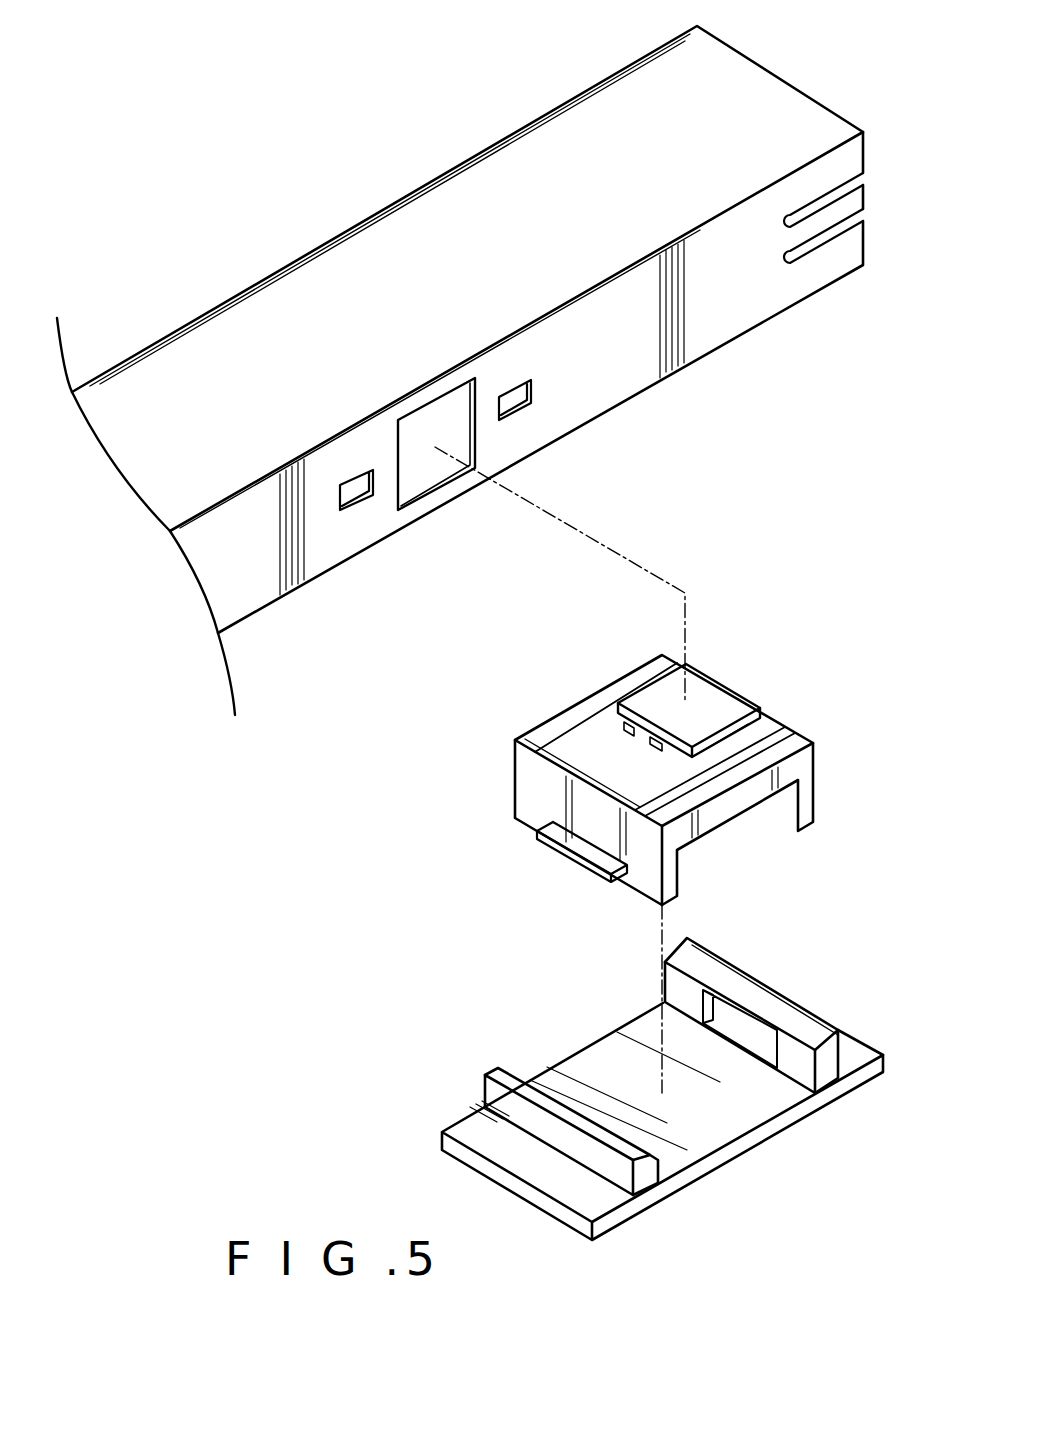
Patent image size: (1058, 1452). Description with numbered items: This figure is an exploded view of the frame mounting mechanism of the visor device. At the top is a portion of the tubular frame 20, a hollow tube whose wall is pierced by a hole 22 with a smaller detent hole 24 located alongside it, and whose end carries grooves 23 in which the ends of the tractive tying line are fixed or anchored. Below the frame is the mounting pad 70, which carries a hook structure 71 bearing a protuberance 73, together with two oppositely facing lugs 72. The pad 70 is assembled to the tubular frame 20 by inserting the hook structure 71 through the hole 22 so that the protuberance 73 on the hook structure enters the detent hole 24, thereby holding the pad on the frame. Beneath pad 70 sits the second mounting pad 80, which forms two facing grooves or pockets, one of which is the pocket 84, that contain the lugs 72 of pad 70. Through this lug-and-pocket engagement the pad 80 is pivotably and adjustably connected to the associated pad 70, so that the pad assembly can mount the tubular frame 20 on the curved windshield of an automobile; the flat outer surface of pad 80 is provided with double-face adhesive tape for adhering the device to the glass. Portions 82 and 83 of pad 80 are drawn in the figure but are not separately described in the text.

The tubular frame 20 is at (780, 107).
The hole 22 is at (427, 475).
The grooves 23 is at (832, 233).
The detent hole 24 is at (518, 398).
The mounting pad 70 is at (807, 767).
The hook structure 71 is at (723, 700).
The lugs 72 is at (570, 857).
The protuberance 73 is at (655, 740).
The mounting pad 80 is at (860, 1053).
The rail 82 is at (735, 982).
The rail 83 is at (625, 1150).
The groove or pocket 84 is at (747, 1027).